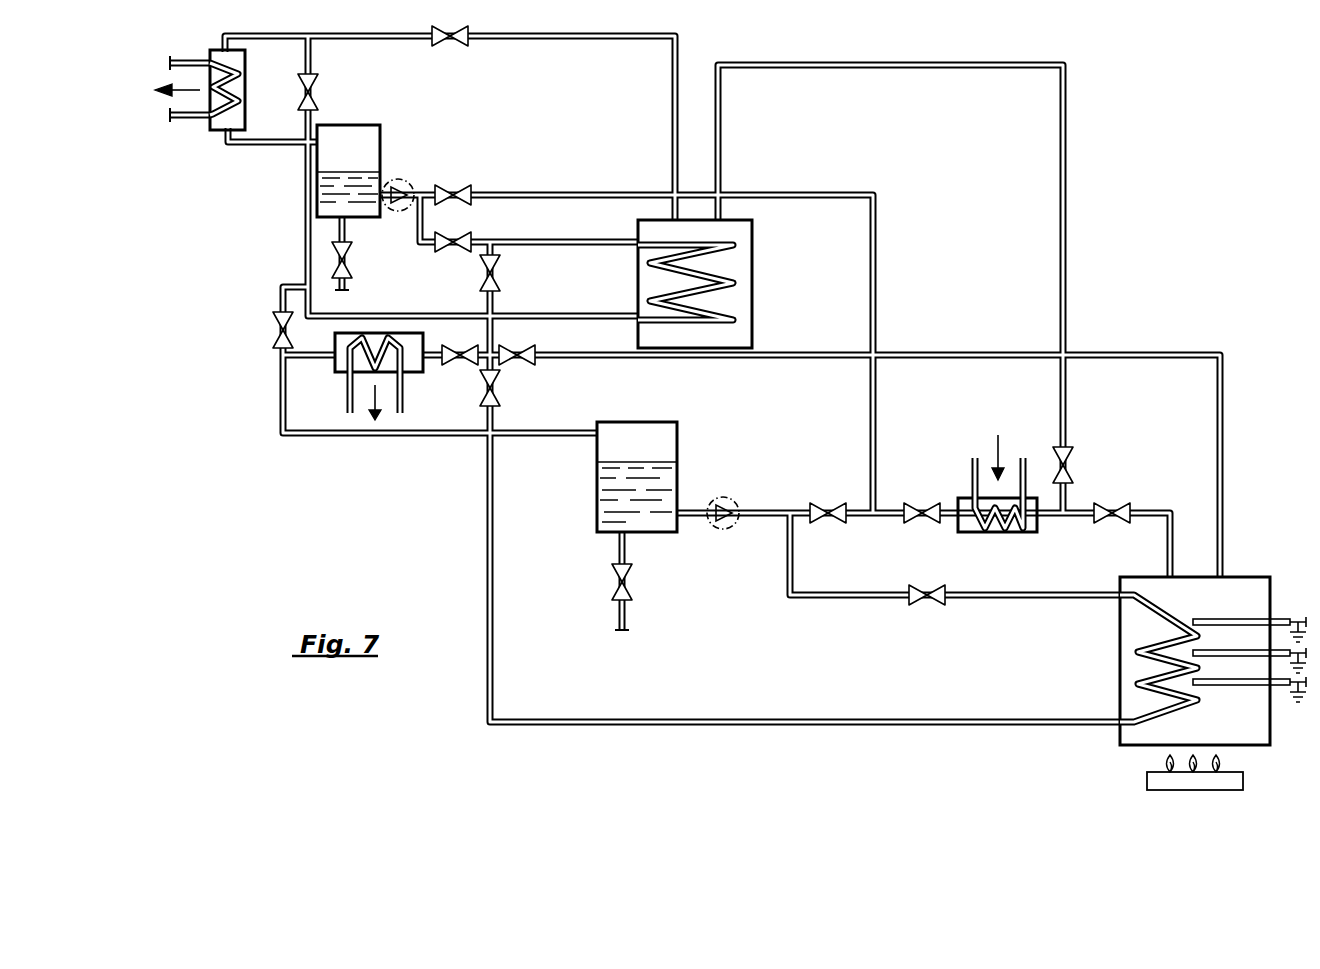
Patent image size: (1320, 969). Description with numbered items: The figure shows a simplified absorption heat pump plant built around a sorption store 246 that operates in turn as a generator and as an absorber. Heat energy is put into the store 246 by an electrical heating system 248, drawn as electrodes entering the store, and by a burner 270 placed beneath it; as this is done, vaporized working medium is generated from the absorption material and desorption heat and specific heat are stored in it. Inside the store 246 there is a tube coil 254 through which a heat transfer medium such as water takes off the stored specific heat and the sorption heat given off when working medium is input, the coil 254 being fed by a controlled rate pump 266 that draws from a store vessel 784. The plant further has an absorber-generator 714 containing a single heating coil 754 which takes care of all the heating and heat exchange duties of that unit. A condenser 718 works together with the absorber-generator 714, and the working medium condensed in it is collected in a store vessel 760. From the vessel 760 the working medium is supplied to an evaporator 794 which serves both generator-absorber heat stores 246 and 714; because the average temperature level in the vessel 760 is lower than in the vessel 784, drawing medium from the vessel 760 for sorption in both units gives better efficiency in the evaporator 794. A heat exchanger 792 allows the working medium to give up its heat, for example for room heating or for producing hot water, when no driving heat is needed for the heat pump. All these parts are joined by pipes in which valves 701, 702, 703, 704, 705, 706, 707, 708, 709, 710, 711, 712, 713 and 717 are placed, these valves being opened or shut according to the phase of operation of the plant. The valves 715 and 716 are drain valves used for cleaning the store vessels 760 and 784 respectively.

The condenser 718 is at (220, 133).
The valve 713 is at (316, 95).
The valve 712 is at (446, 48).
The store vessel 760 is at (372, 132).
The drain valve 715 is at (351, 258).
The valve 709 is at (448, 182).
The valve 710 is at (470, 236).
The valve 711 is at (500, 277).
The absorber-generator 714 is at (752, 226).
The heating coil 754 is at (720, 274).
The heat exchanger 792 is at (412, 332).
The valve 717 is at (272, 328).
The valve 708 is at (458, 366).
The valve 707 is at (530, 351).
The valve 706 is at (500, 393).
The store vessel 784 is at (680, 431).
The drain valve 716 is at (632, 580).
The controlled rate pump 266 is at (736, 500).
The valve 704 is at (830, 524).
The valve 705 is at (918, 501).
The evaporator 794 is at (966, 535).
The valve 702 is at (1072, 463).
The valve 701 is at (1110, 504).
The valve 703 is at (928, 607).
The sorption store 246 is at (1258, 566).
The tube coil 254 is at (1140, 664).
The electrical heating system 248 is at (1228, 620).
The burner 270 is at (1147, 783).